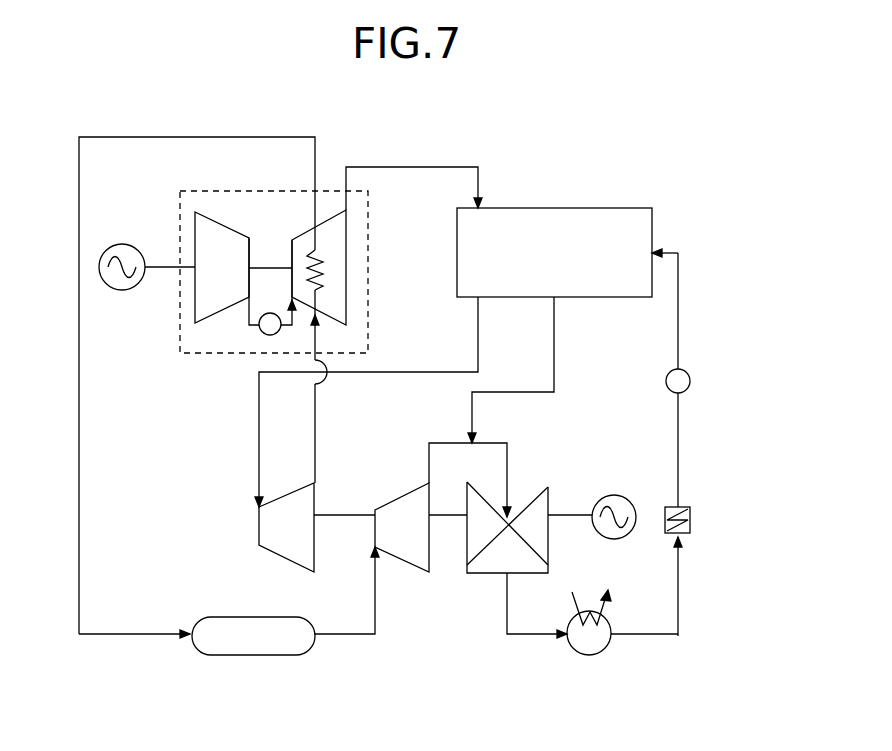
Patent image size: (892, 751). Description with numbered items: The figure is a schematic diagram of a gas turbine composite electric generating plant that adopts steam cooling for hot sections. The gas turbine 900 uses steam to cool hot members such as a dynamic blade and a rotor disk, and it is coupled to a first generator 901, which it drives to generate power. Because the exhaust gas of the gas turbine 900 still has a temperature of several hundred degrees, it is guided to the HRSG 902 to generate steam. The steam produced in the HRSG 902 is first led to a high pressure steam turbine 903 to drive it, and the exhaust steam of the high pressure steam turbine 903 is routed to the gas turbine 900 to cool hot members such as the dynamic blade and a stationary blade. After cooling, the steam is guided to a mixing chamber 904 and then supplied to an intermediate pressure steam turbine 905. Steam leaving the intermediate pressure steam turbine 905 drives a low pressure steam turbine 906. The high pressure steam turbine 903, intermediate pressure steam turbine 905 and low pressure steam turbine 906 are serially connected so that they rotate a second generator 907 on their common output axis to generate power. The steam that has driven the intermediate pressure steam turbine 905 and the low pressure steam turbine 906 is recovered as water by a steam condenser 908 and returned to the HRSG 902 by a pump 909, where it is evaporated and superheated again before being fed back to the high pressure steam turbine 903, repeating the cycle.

The gas turbine 900 is at (325, 190).
The first generator 901 is at (122, 244).
The HRSG 902 is at (600, 208).
The high pressure steam turbine 903 is at (259, 530).
The mixing chamber 904 is at (255, 655).
The intermediate pressure steam turbine 905 is at (419, 575).
The low pressure steam turbine 906 is at (545, 485).
The second generator 907 is at (612, 495).
The steam condenser 908 is at (588, 655).
The pump 909 is at (690, 378).